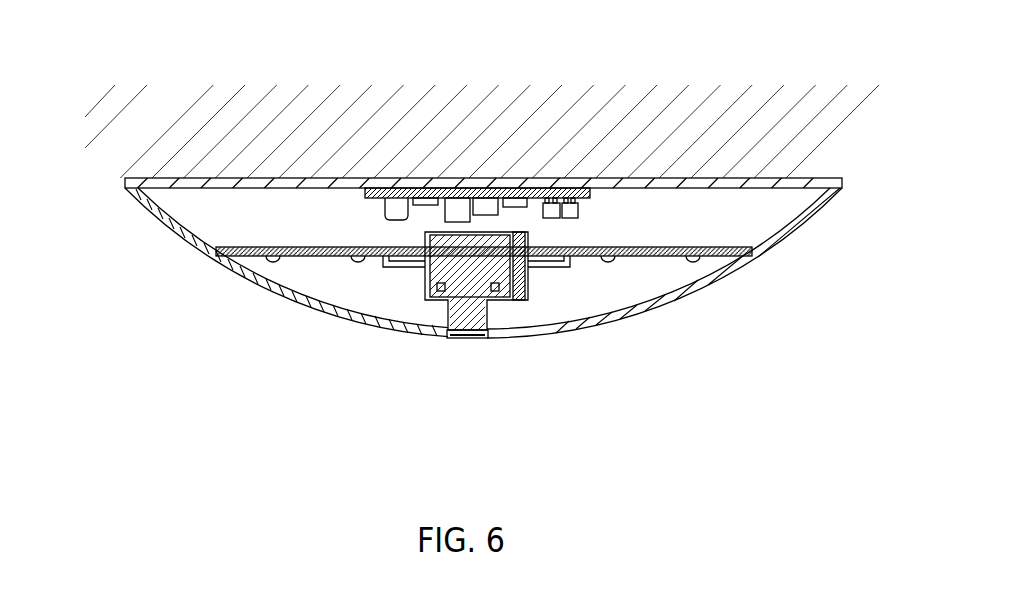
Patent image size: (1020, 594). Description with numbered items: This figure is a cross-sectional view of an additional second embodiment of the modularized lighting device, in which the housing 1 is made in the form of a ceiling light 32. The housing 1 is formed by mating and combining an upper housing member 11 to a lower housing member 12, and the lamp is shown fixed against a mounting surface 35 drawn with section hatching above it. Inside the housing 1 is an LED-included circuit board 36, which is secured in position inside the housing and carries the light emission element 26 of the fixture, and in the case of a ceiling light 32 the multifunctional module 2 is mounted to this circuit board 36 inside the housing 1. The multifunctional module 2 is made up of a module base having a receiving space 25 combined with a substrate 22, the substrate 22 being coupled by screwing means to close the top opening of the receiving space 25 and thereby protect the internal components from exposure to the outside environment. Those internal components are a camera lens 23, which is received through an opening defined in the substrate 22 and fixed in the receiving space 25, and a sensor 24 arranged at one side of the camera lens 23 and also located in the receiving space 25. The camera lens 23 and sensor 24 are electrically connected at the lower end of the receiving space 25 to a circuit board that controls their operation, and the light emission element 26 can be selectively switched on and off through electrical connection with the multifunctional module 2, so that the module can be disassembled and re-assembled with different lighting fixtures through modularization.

The housing 1 is at (476, 258).
The upper housing member 11 is at (822, 206).
The lower housing member 12 is at (125, 181).
The multifunctional module 2 is at (485, 321).
The substrate 22 is at (443, 301).
The camera lens 23 is at (467, 339).
The sensor 24 is at (520, 284).
The receiving space 25 is at (424, 296).
The light emission element 26 is at (693, 263).
The ceiling light 32 is at (178, 251).
The mounting surface 35 is at (289, 102).
The circuit board 36 is at (643, 246).